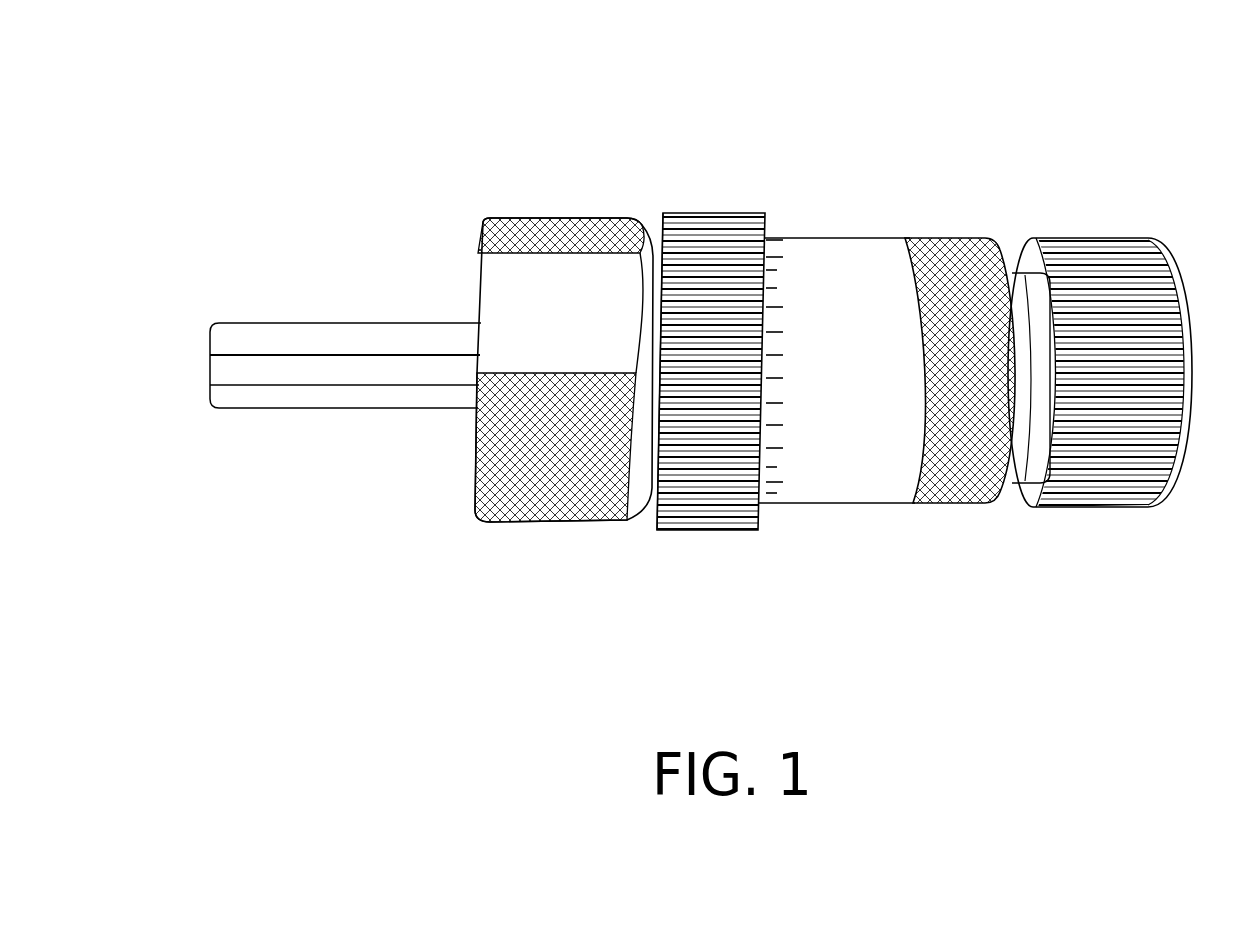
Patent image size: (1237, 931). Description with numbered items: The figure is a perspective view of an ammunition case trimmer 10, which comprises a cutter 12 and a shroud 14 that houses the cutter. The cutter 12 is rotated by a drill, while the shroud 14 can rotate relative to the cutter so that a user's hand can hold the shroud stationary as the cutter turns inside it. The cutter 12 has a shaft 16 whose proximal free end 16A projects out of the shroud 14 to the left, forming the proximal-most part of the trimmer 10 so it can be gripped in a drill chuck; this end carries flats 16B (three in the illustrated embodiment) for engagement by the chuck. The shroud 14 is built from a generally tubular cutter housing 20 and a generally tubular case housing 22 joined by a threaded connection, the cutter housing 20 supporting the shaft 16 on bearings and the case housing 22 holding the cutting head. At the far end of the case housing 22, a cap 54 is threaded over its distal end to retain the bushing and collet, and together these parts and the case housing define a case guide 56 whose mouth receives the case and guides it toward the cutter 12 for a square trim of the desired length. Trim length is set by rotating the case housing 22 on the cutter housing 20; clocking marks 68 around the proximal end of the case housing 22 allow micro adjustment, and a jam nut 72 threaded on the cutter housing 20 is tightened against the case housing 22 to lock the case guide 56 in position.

The trimmer 10 is at (962, 125).
The cutter 12 is at (440, 410).
The shroud 14 is at (950, 197).
The shaft 16 is at (397, 320).
The proximal free end 16A is at (297, 408).
The flat 16B is at (318, 337).
The cutter housing 20 is at (583, 217).
The case housing 22 is at (882, 237).
The cap 54 is at (1087, 243).
The case guide 56 is at (923, 508).
The clocking marks 68 is at (773, 240).
The jam nut 72 is at (712, 215).